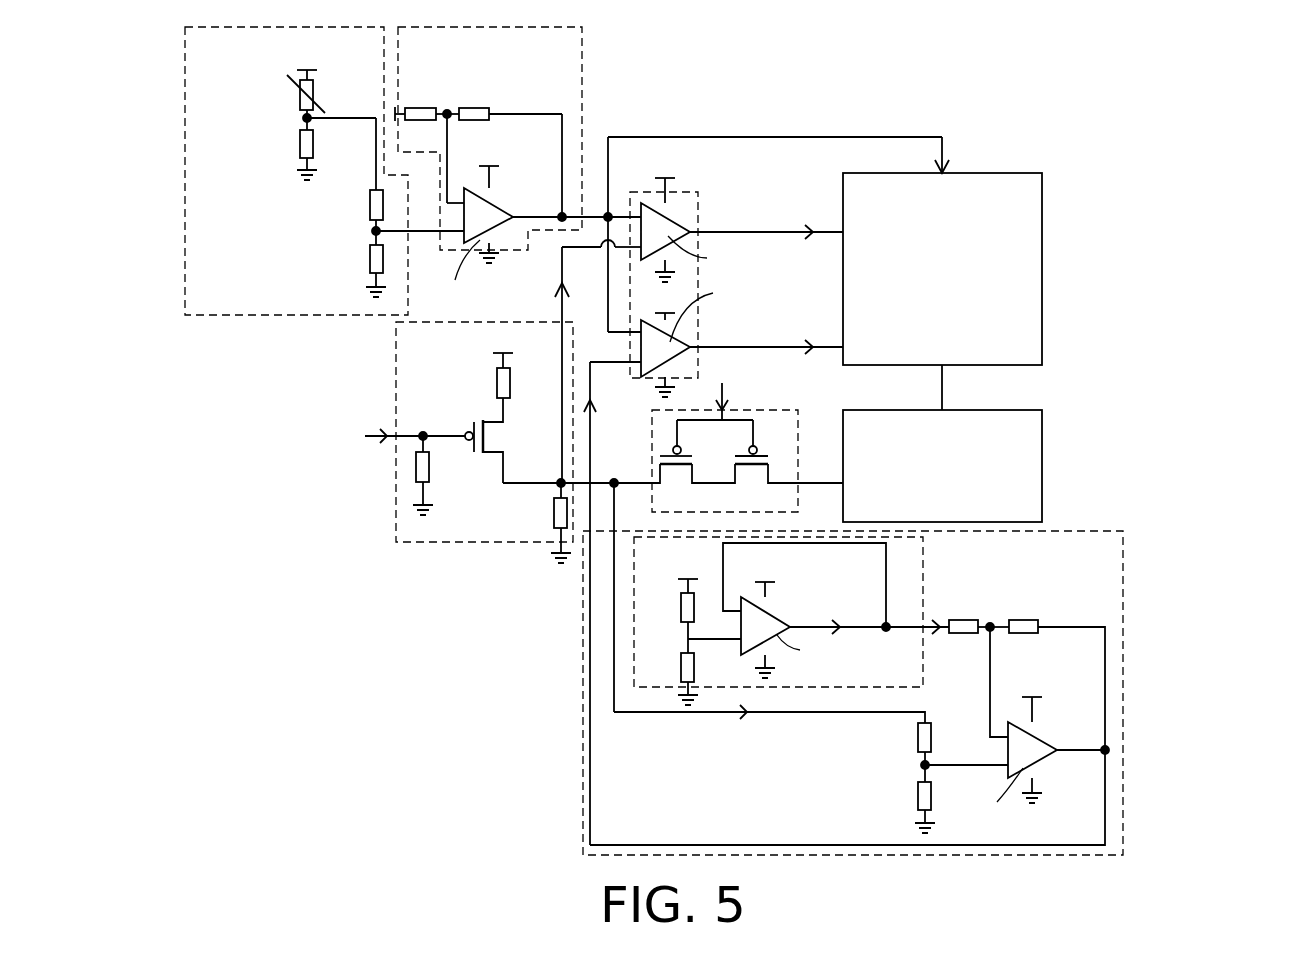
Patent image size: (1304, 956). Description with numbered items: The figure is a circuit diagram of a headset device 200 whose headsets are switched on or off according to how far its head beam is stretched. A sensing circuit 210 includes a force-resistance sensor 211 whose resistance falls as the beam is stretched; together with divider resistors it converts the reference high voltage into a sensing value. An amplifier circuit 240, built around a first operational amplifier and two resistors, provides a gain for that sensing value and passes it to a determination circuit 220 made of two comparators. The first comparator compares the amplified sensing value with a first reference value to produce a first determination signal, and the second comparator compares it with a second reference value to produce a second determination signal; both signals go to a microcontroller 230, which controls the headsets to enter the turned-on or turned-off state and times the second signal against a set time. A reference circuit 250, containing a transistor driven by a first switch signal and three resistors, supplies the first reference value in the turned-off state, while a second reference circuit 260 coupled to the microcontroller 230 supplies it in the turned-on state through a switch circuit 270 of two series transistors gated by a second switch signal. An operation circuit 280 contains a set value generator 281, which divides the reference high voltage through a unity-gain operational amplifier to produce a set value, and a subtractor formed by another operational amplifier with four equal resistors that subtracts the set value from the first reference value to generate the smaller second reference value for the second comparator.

The headset device 200 is at (1286, 855).
The sensing circuit 210 is at (185, 167).
The force-resistance sensor 211 is at (298, 100).
The determination circuit 220 is at (698, 192).
The microcontroller 230 is at (1043, 268).
The amplifier circuit 240 is at (582, 65).
The reference circuit 250 is at (396, 408).
The reference circuit 260 is at (1043, 465).
The switch circuit 270 is at (798, 410).
The operation circuit 280 is at (1123, 590).
The set value generator 281 is at (923, 570).